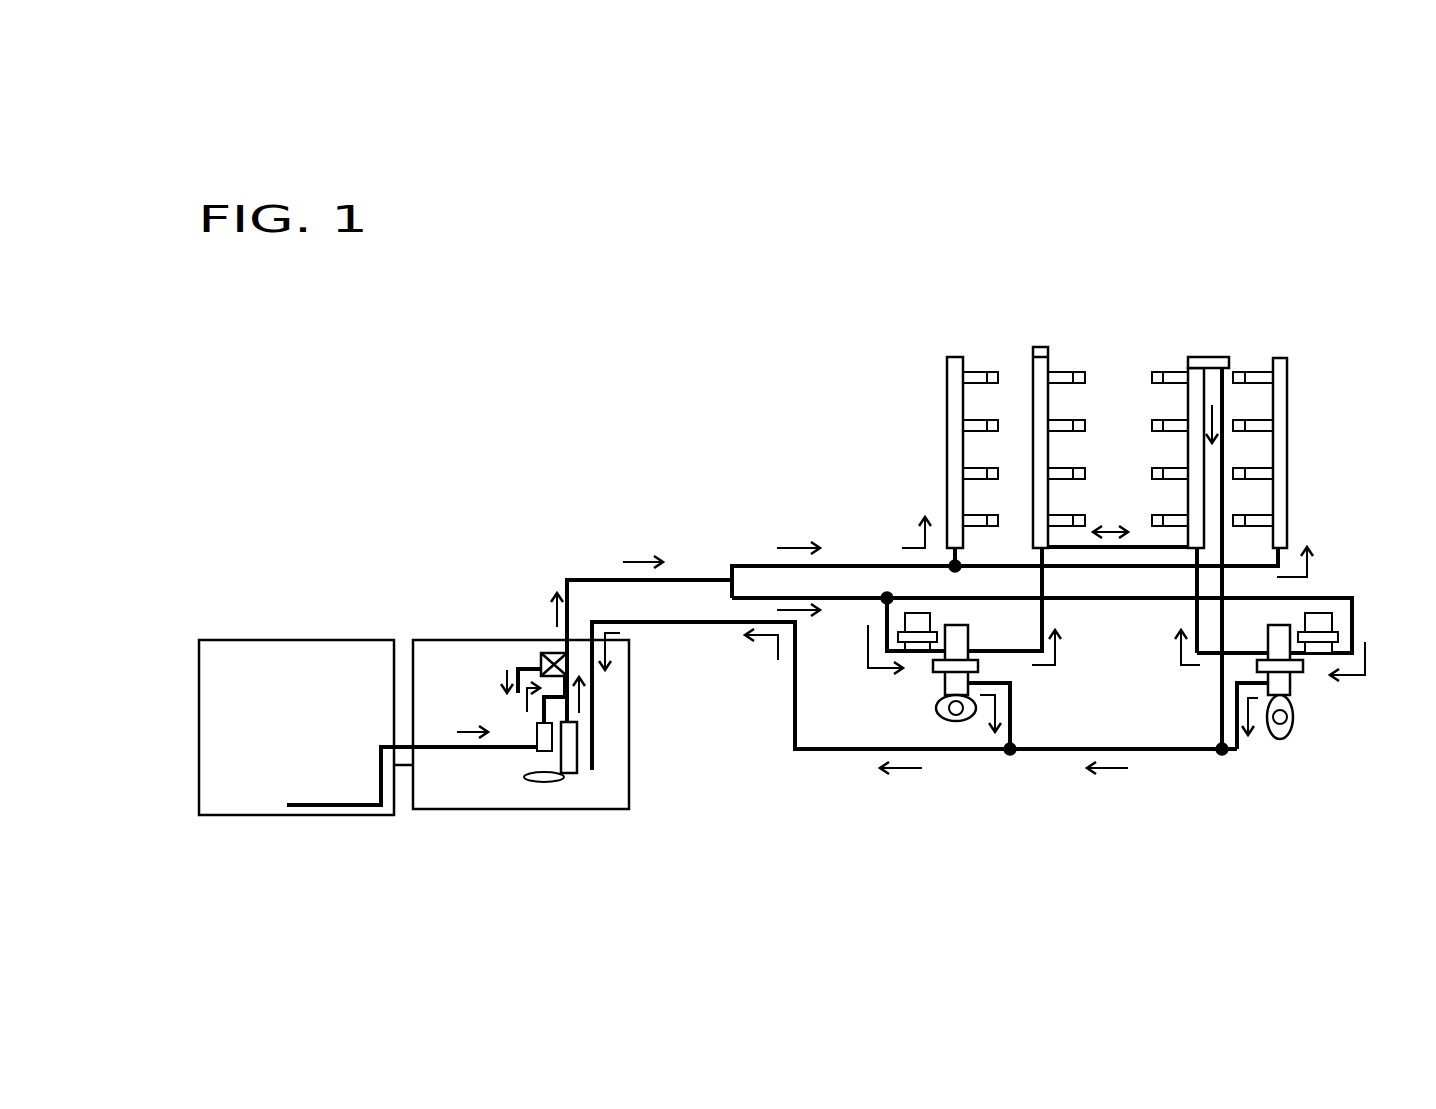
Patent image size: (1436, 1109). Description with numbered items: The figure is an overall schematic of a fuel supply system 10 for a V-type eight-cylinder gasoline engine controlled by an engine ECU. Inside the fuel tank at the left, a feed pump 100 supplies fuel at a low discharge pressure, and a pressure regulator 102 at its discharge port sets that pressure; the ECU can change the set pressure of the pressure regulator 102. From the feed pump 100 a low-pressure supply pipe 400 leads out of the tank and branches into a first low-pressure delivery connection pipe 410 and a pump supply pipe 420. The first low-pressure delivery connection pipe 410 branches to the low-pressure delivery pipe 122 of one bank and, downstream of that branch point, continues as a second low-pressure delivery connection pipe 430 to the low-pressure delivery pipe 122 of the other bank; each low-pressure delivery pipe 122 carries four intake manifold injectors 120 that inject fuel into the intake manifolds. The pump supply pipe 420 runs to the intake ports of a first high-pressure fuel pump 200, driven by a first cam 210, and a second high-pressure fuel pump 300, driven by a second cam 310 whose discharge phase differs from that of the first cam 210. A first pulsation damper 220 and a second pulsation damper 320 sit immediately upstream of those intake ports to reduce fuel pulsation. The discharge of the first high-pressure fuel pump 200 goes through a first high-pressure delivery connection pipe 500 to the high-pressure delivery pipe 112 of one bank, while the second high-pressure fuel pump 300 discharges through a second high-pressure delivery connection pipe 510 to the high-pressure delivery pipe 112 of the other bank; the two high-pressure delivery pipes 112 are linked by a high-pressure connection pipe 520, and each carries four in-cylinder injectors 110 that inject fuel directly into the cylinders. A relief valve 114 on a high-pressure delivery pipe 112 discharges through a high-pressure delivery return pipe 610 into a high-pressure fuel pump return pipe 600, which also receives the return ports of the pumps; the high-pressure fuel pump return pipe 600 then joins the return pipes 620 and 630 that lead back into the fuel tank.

The fuel supply system 10 is at (668, 440).
The feed pump 100 is at (570, 773).
The pressure regulator 102 is at (541, 653).
The in-cylinder injector 110 is at (1173, 373).
The high-pressure delivery pipe 112 is at (1033, 380).
The relief valve 114 is at (1215, 362).
The intake manifold injector 120 is at (977, 373).
The low-pressure delivery pipe 122 is at (947, 357).
The first high-pressure fuel pump 200 is at (945, 683).
The first cam 210 is at (937, 710).
The first pulsation damper 220 is at (928, 623).
The second high-pressure fuel pump 300 is at (1295, 685).
The second cam 310 is at (1290, 727).
The second pulsation damper 320 is at (1340, 625).
The low-pressure supply pipe 400 is at (608, 580).
The first low-pressure delivery connection pipe 410 is at (835, 565).
The pump supply pipe 420 is at (797, 598).
The second low-pressure delivery connection pipe 430 is at (1092, 570).
The first high-pressure delivery connection pipe 500 is at (1045, 620).
The second high-pressure delivery connection pipe 510 is at (1193, 620).
The high-pressure connection pipe 520 is at (1137, 537).
The high-pressure fuel pump return pipe 600 is at (1012, 707).
The high-pressure delivery return pipe 610 is at (1220, 707).
The return pipe 620 is at (1167, 752).
The return pipe 630 is at (950, 753).